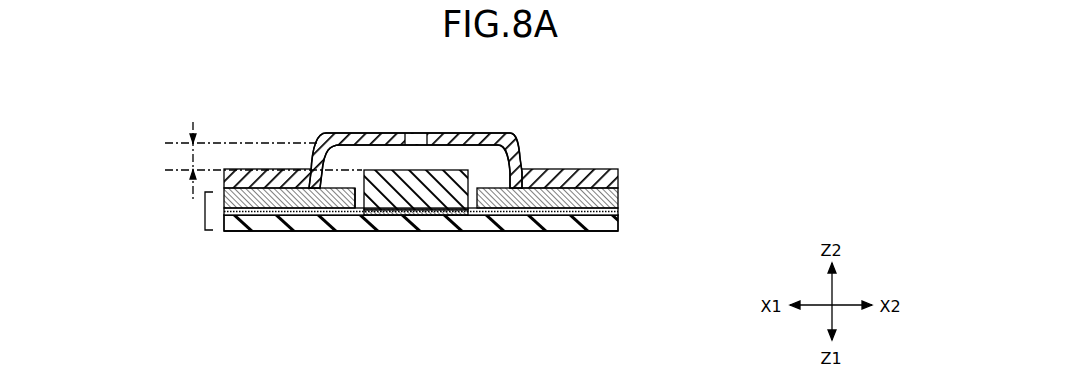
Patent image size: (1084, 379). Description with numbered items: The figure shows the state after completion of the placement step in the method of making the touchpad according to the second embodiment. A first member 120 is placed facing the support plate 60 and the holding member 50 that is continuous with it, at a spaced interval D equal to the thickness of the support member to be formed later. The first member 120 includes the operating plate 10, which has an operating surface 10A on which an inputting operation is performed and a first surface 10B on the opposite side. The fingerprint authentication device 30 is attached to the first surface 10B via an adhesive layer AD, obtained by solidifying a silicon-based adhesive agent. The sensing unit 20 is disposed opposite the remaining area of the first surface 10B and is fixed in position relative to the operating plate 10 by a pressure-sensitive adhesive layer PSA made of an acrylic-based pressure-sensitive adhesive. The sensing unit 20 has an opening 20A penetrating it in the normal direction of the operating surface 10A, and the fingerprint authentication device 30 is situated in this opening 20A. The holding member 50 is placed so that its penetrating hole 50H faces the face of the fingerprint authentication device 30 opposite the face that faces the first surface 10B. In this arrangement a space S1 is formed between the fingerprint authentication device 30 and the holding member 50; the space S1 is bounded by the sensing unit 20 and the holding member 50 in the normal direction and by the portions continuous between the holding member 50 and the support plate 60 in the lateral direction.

The operating plate 10 is at (588, 222).
The operating surface 10A is at (493, 231).
The first surface 10B is at (272, 213).
The sensing unit 20 is at (618, 197).
The opening 20A is at (358, 196).
The fingerprint authentication device 30 is at (413, 197).
The holding member 50 is at (483, 133).
The penetrating hole 50H is at (418, 138).
The support plate 60 is at (585, 170).
The adhesive layer AD is at (373, 215).
The pressure-sensitive adhesive layer PSA is at (618, 212).
The space S1 is at (388, 152).
The first member 120 is at (205, 212).
The spaced interval D is at (261, 161).